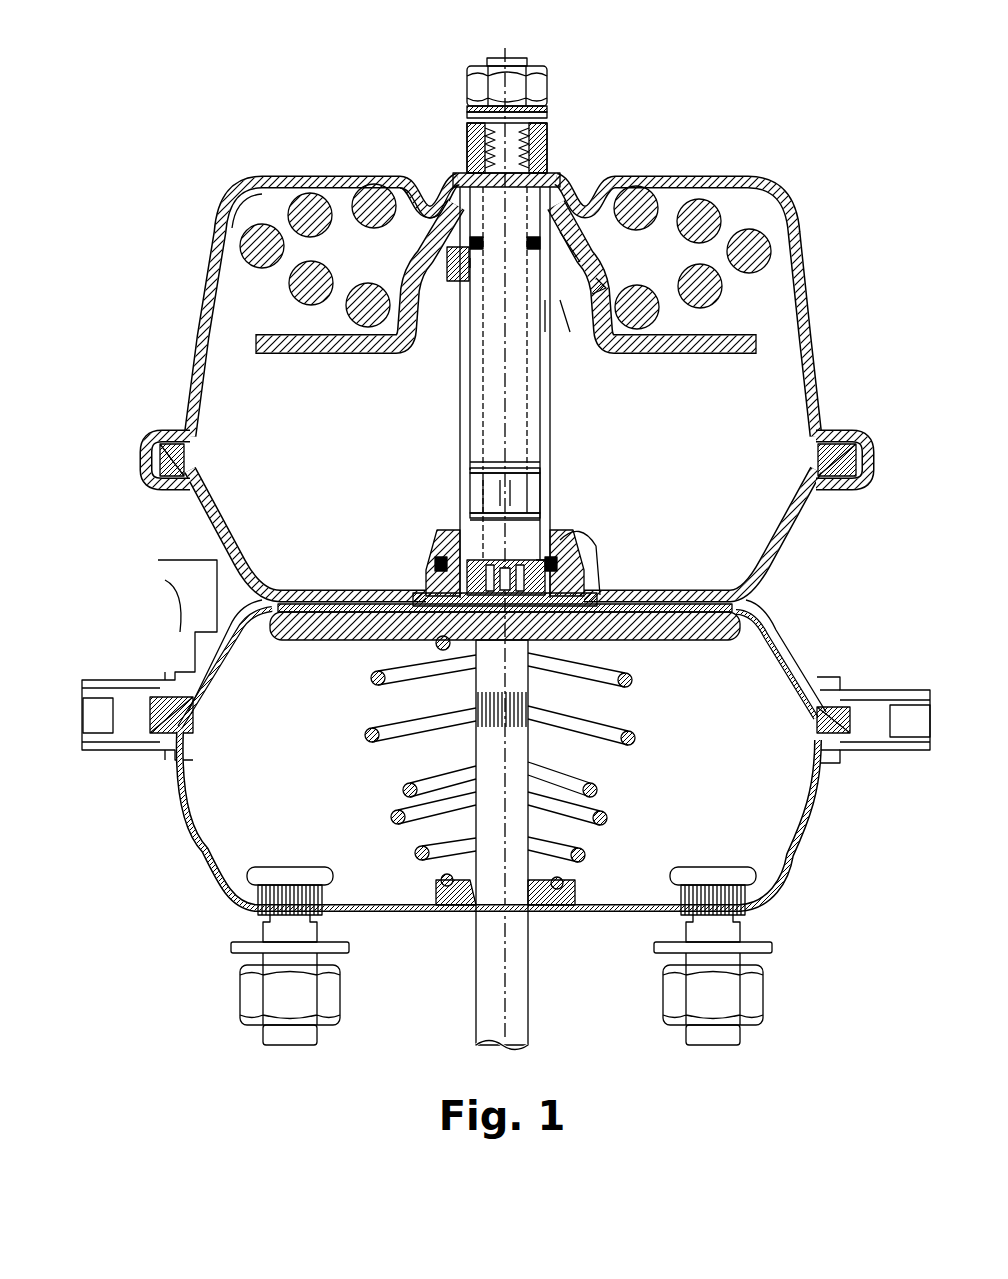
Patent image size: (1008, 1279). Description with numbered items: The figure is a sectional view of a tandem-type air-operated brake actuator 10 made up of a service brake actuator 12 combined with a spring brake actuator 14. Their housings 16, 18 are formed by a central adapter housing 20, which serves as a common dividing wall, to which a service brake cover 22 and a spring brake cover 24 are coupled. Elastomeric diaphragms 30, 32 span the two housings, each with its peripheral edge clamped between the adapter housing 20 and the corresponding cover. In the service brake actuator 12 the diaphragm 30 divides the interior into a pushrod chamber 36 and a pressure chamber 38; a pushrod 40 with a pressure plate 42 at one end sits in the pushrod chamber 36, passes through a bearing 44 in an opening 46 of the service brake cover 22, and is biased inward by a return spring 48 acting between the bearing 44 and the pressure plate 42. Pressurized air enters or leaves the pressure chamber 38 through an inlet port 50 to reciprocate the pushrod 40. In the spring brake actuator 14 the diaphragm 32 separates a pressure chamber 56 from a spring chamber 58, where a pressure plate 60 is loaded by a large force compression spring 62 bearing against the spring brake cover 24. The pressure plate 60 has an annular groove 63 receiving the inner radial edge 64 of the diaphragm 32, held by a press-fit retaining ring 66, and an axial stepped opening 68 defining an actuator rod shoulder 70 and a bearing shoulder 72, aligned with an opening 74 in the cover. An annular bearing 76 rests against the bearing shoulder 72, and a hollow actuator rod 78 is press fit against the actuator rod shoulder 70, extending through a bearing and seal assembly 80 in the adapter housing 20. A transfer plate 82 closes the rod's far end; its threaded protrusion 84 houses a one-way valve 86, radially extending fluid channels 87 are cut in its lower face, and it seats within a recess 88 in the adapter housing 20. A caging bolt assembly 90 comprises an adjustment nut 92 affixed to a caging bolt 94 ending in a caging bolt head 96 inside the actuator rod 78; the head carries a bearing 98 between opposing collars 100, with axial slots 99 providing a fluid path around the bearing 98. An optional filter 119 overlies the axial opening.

The tandem-type air-operated brake actuator 10 is at (427, 30).
The service brake actuator 12 is at (822, 866).
The spring brake actuator 14 is at (830, 522).
The service brake housing 16 is at (786, 900).
The spring brake housing 18 is at (802, 548).
The adapter housing 20 is at (780, 616).
The service brake cover 22 is at (818, 808).
The spring brake cover 24 is at (730, 178).
The diaphragm 30 is at (216, 693).
The diaphragm 32 is at (330, 356).
The pushrod chamber 36 is at (693, 804).
The pressure chamber 38 is at (764, 632).
The pushrod 40 is at (530, 992).
The pressure plate 42 is at (697, 642).
The bearing 44 is at (458, 908).
The opening 46 is at (550, 910).
The return spring 48 is at (402, 788).
The inlet port 50 is at (176, 606).
The pressure chamber 56 is at (740, 464).
The spring chamber 58 is at (740, 319).
The pressure plate 60 is at (648, 342).
The large force compression spring 62 is at (312, 205).
The annular groove 63 is at (594, 283).
The inner radial edge 64 is at (548, 334).
The retaining ring 66 is at (574, 334).
The axial stepped opening 68 is at (450, 260).
The actuator rod shoulder 70 is at (567, 246).
The bearing shoulder 72 is at (548, 216).
The opening 74 is at (550, 174).
The annular bearing 76 is at (455, 183).
The hollow actuator rod 78 is at (457, 446).
The bearing and seal assembly 80 is at (578, 540).
The transfer plate 82 is at (396, 580).
The threaded protrusion 84 is at (572, 571).
The one-way valve 86 is at (592, 640).
The radially extending fluid channels 87 is at (352, 642).
The recess 88 is at (588, 598).
The caging bolt assembly 90 is at (466, 136).
The adjustment nut 92 is at (533, 62).
The caging bolt 94 is at (535, 436).
The caging bolt head 96 is at (540, 505).
The bearing 98 is at (488, 493).
The axial slots 99 is at (538, 480).
The collars 100 is at (478, 474).
The filter 119 is at (506, 563).